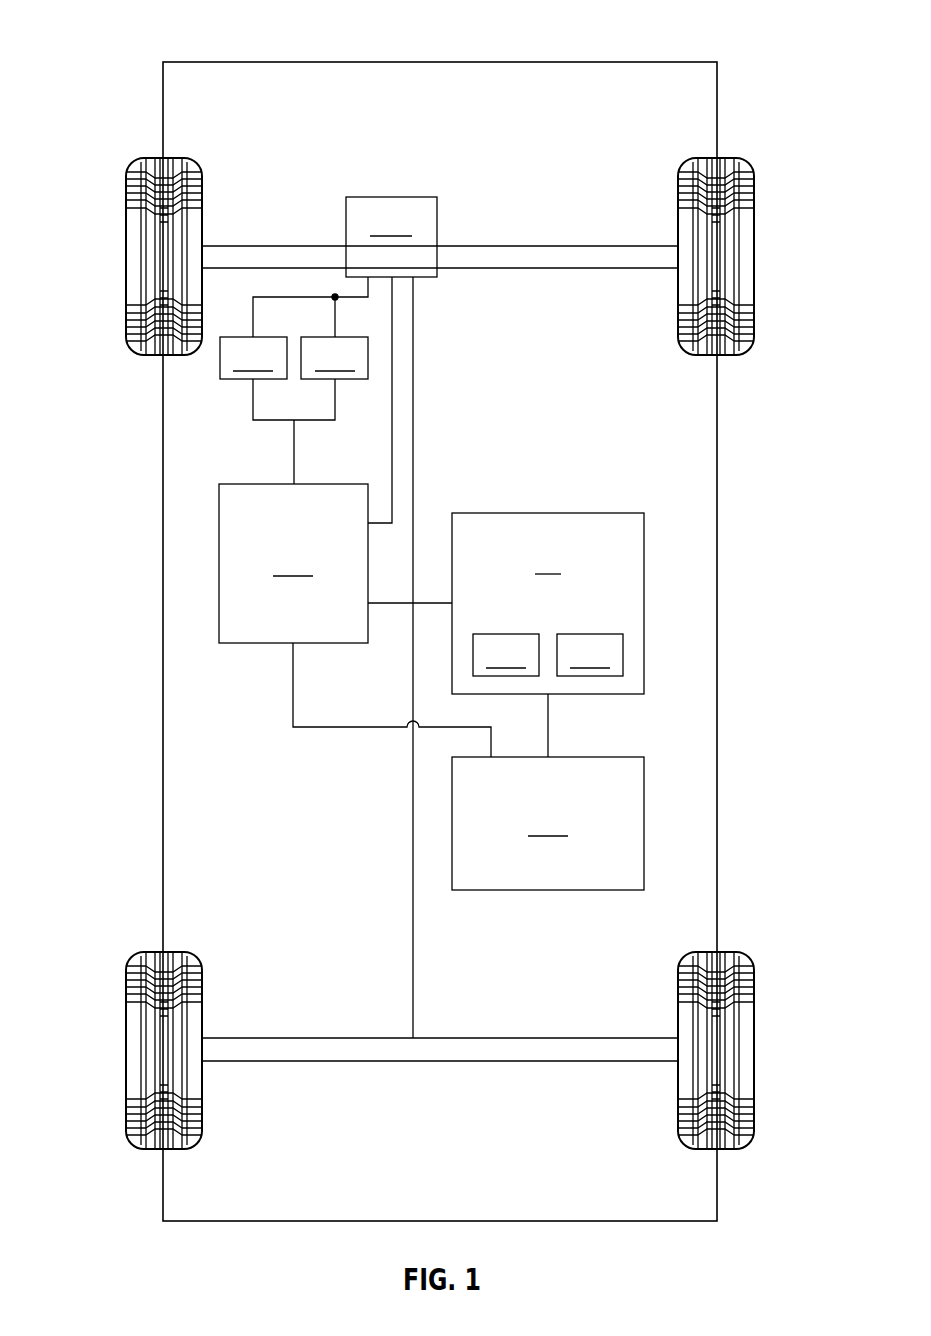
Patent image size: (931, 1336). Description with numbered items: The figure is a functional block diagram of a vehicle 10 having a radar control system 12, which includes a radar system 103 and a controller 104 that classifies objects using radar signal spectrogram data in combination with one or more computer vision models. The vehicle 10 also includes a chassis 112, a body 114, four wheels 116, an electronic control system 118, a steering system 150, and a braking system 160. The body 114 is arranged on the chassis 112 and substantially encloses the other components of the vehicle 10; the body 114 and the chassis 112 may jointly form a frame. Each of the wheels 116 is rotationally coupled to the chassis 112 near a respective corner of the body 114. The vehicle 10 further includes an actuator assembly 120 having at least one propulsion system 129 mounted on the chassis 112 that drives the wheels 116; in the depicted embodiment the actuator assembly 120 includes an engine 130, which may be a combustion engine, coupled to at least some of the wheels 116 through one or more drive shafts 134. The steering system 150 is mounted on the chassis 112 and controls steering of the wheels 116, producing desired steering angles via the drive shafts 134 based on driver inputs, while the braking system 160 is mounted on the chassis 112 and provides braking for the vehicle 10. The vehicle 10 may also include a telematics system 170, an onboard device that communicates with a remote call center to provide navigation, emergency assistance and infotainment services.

The vehicle 10 is at (126, 34).
The radar control system 12 is at (548, 603).
The radar system 103 is at (506, 655).
The controller 104 is at (590, 655).
The chassis 112 is at (413, 850).
The body 114 is at (163, 633).
The wheels 116 is at (124, 257).
The electronic control system 118 is at (293, 563).
The actuator assembly 120 is at (425, 282).
The propulsion system 129 is at (393, 197).
The engine 130 is at (391, 206).
The drive shafts 134 is at (260, 246).
The steering system 150 is at (253, 358).
The braking system 160 is at (334, 358).
The telematics system 170 is at (548, 823).